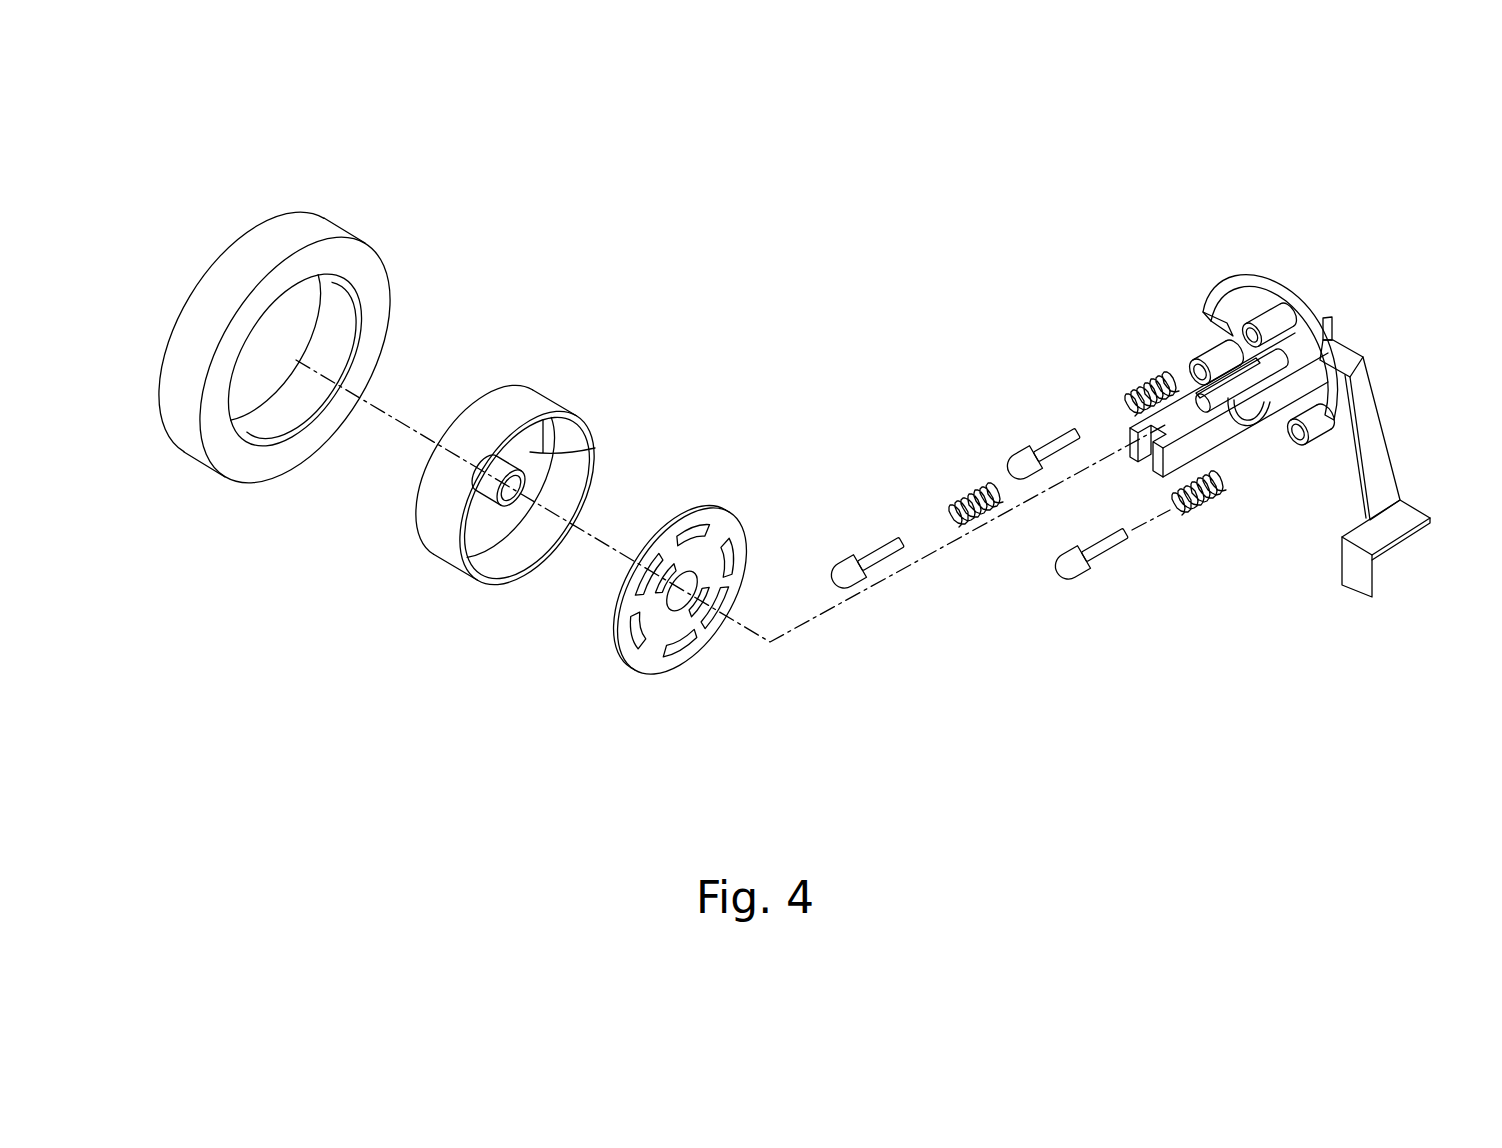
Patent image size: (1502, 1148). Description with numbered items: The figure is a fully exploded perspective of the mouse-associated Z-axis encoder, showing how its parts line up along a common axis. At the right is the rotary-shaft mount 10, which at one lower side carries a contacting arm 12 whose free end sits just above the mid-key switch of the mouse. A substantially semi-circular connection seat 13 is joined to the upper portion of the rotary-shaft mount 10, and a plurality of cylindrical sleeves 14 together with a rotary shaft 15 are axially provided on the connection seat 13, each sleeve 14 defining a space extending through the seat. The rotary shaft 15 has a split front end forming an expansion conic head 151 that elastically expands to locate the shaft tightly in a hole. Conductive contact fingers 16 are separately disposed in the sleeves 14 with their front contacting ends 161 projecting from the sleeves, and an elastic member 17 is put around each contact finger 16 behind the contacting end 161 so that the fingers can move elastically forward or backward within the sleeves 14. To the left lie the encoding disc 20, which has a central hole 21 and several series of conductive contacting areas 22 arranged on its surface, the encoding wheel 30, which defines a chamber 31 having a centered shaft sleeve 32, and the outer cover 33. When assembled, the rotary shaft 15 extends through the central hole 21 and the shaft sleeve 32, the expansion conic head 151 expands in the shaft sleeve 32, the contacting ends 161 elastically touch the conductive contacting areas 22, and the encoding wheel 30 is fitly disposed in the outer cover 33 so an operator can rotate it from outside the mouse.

The rotary-shaft mount 10 is at (1356, 264).
The contacting arm 12 is at (1380, 463).
The connection seat 13 is at (1298, 372).
The cylindrical sleeves 14 is at (1200, 372).
The rotary shaft 15 is at (1265, 400).
The expansion conic head 151 is at (1218, 405).
The contact fingers 16 is at (883, 555).
The contacting end 161 is at (843, 582).
The elastic member 17 is at (968, 490).
The encoding disc 20 is at (707, 507).
The central hole 21 is at (684, 598).
The conductive contacting areas 22 is at (632, 630).
The encoding wheel 30 is at (524, 398).
The chamber 31 is at (528, 460).
The shaft sleeve 32 is at (490, 487).
The outer cover 33 is at (265, 230).